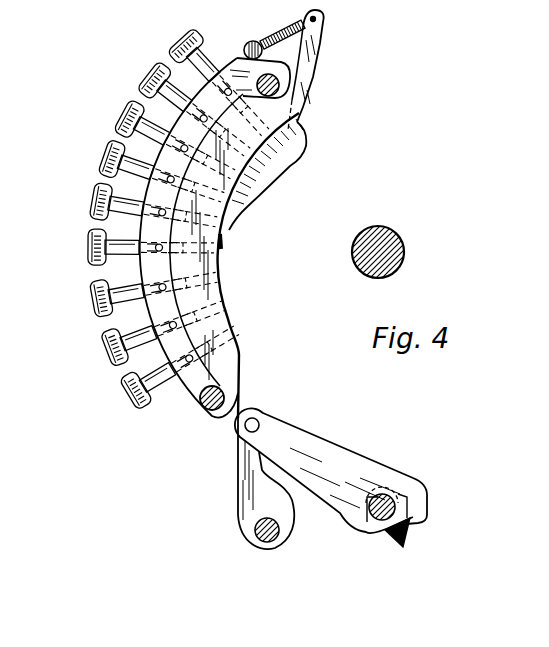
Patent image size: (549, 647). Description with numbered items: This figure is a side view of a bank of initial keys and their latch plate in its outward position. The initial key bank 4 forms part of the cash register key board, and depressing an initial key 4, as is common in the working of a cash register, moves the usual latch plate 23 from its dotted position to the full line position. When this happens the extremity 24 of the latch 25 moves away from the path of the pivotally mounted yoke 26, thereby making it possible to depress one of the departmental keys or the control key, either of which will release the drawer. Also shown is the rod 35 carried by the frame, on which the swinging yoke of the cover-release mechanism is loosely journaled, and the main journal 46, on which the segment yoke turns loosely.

The initial key bank 4 is at (92, 205).
The latch plate 23 is at (220, 297).
The extremity of latch 24 is at (423, 508).
The latch 25 is at (328, 468).
The yoke 26 is at (410, 533).
The rod 35 is at (252, 543).
The main journal 46 is at (387, 245).